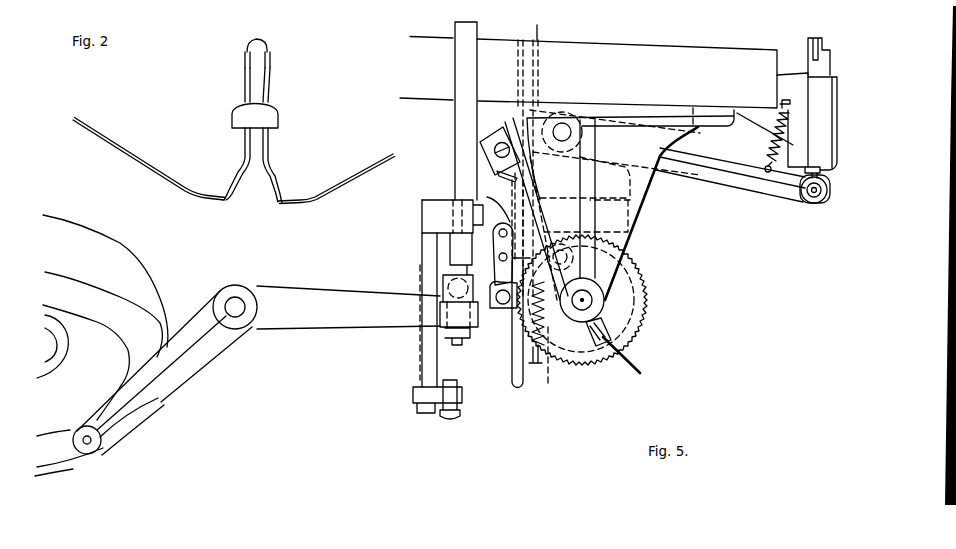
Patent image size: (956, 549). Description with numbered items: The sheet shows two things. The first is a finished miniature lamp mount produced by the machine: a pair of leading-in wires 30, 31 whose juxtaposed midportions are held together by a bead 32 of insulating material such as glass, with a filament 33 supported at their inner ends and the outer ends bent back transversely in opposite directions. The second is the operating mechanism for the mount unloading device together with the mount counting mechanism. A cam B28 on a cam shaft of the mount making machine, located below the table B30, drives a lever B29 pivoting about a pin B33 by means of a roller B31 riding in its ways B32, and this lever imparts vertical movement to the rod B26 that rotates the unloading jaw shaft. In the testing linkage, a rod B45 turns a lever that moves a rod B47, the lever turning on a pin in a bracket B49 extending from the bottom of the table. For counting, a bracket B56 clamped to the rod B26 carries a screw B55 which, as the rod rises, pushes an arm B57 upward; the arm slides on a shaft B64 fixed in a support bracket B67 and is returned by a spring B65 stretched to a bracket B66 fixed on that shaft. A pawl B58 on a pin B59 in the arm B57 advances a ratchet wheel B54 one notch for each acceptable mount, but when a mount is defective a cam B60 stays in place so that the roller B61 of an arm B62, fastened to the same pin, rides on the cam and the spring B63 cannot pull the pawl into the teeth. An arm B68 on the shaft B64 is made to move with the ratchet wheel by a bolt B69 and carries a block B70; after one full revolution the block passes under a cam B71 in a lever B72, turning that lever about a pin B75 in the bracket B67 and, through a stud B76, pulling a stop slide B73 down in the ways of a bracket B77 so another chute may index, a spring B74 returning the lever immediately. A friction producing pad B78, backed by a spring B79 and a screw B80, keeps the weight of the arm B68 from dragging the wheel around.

In FIG. 2, the leading-in wire 30 is at (246, 143).
In FIG. 2, the leading-in wire 31 is at (270, 143).
In FIG. 2, the bead 32 is at (275, 104).
In FIG. 2, the filament 33 is at (262, 42).
In FIG. 5, the rod B26 is at (460, 180).
In FIG. 5, the cam B28 is at (147, 422).
In FIG. 5, the lever B29 is at (316, 330).
In FIG. 5, the table B30 is at (631, 42).
In FIG. 5, the roller B31 is at (97, 448).
In FIG. 5, the ways B32 is at (65, 458).
In FIG. 5, the pin B33 is at (236, 297).
In FIG. 5, the rod B45 is at (512, 378).
In FIG. 5, the rod B47 is at (540, 33).
In FIG. 5, the bracket B49 is at (647, 196).
In FIG. 5, the ratchet wheel B54 is at (645, 317).
In FIG. 5, the screw B55 is at (462, 410).
In FIG. 5, the bracket B56 is at (422, 362).
In FIG. 5, the arm B57 is at (440, 298).
In FIG. 5, the pawl B58 is at (493, 313).
In FIG. 5, the pin B59 is at (502, 305).
In FIG. 5, the cam B60 is at (522, 209).
In FIG. 5, the roller B61 is at (489, 254).
In FIG. 5, the arm B62 is at (499, 258).
In FIG. 5, the spring B63 is at (497, 283).
In FIG. 5, the shaft B64 is at (593, 297).
In FIG. 5, the spring B65 is at (585, 368).
In FIG. 5, the bracket B66 is at (548, 363).
In FIG. 5, the support bracket B67 is at (637, 228).
In FIG. 5, the arm B68 is at (610, 320).
In FIG. 5, the bolt B69 is at (625, 251).
In FIG. 5, the block B70 is at (500, 175).
In FIG. 5, the cam B71 is at (486, 135).
In FIG. 5, the lever B72 is at (733, 188).
In FIG. 5, the stop slide B73 is at (808, 53).
In FIG. 5, the spring B74 is at (770, 143).
In FIG. 5, the pin B75 is at (563, 125).
In FIG. 5, the stud B76 is at (834, 185).
In FIG. 5, the bracket B77 is at (797, 157).
In FIG. 5, the friction producing pad B78 is at (602, 300).
In FIG. 5, the spring B79 is at (617, 331).
In FIG. 5, the screw B80 is at (635, 358).